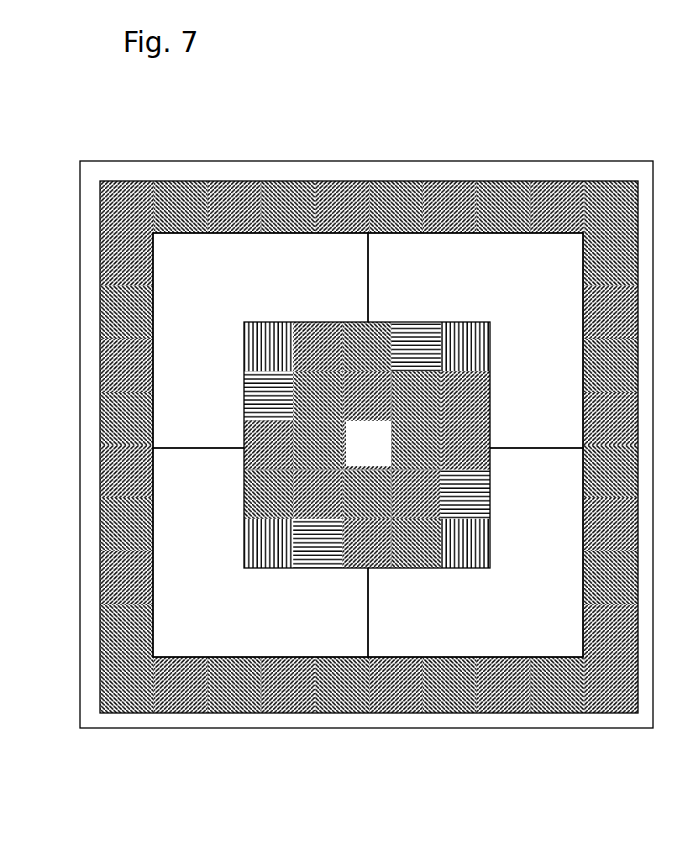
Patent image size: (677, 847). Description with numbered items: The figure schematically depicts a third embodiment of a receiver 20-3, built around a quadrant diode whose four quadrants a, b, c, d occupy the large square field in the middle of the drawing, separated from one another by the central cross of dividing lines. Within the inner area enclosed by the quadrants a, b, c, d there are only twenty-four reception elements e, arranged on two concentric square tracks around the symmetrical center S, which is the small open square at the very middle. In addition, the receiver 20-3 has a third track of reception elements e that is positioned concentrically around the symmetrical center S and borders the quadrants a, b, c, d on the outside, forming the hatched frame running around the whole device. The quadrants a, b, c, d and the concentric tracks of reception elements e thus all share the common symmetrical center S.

The receiver 20-3 is at (363, 165).
The quadrant a is at (227, 265).
The quadrant b is at (520, 267).
The quadrant c is at (507, 620).
The quadrant d is at (282, 632).
The reception elements e is at (102, 592).
The symmetrical center S is at (368, 443).